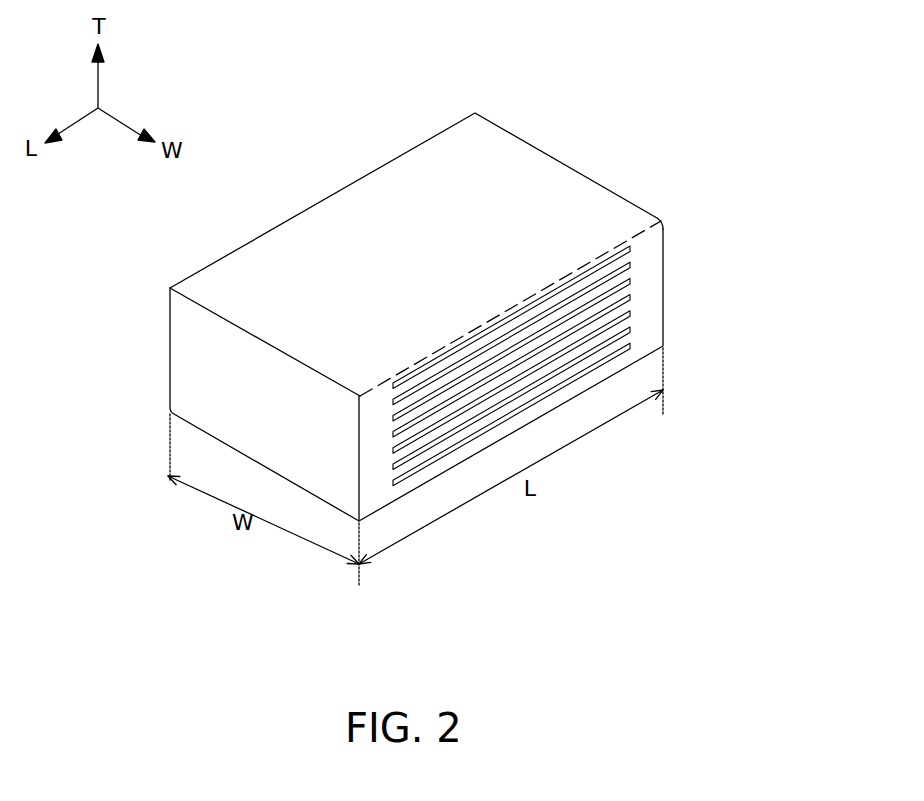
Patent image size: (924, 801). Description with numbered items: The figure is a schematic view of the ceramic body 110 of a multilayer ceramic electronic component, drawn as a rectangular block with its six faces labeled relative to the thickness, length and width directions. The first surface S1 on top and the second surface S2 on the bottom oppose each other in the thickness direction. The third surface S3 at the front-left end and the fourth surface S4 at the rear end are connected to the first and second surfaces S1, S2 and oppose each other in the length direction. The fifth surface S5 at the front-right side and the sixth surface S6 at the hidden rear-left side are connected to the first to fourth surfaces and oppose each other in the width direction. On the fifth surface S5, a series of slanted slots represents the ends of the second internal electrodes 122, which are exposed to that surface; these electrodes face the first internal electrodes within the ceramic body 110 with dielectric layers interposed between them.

The ceramic body 110 is at (422, 287).
The second internal electrodes 122 is at (630, 272).
The first surface S1 is at (380, 200).
The second surface S2 is at (260, 433).
The third surface S3 is at (200, 372).
The fourth surface S4 is at (587, 215).
The fifth surface S5 is at (645, 320).
The sixth surface S6 is at (232, 282).